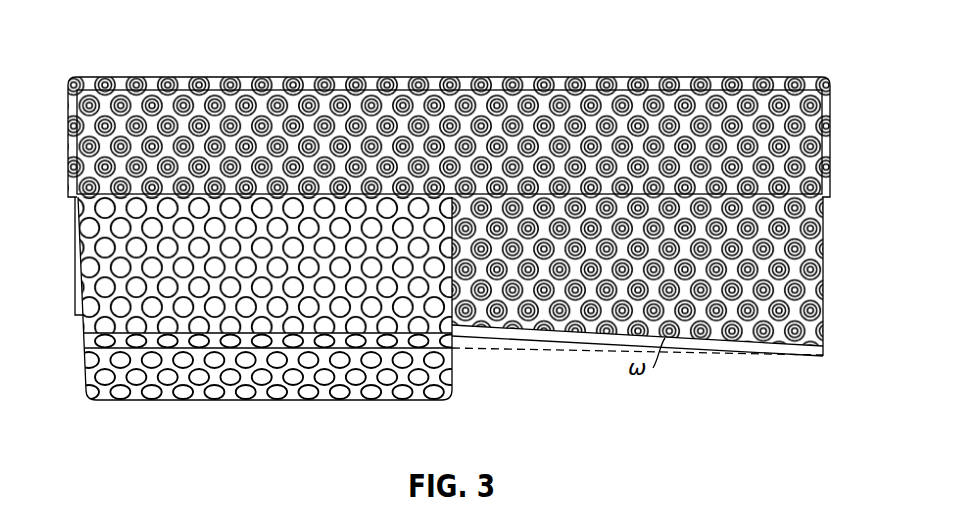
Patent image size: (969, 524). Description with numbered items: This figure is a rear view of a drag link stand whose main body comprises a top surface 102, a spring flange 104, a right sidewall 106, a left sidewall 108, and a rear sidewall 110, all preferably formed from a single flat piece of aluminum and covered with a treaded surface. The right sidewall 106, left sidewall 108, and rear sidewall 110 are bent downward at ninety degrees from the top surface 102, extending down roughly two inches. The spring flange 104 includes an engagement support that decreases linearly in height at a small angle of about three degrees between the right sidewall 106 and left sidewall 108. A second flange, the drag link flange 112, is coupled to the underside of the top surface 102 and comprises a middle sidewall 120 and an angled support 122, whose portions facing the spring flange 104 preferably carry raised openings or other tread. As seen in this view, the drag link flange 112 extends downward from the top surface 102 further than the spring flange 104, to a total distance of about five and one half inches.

The top surface 102 is at (449, 106).
The spring flange 104 is at (822, 275).
The right sidewall 106 is at (72, 148).
The left sidewall 108 is at (831, 143).
The rear sidewall 110 is at (202, 105).
The drag link flange 112 is at (265, 392).
The middle sidewall 120 is at (80, 285).
The angled support 122 is at (452, 360).